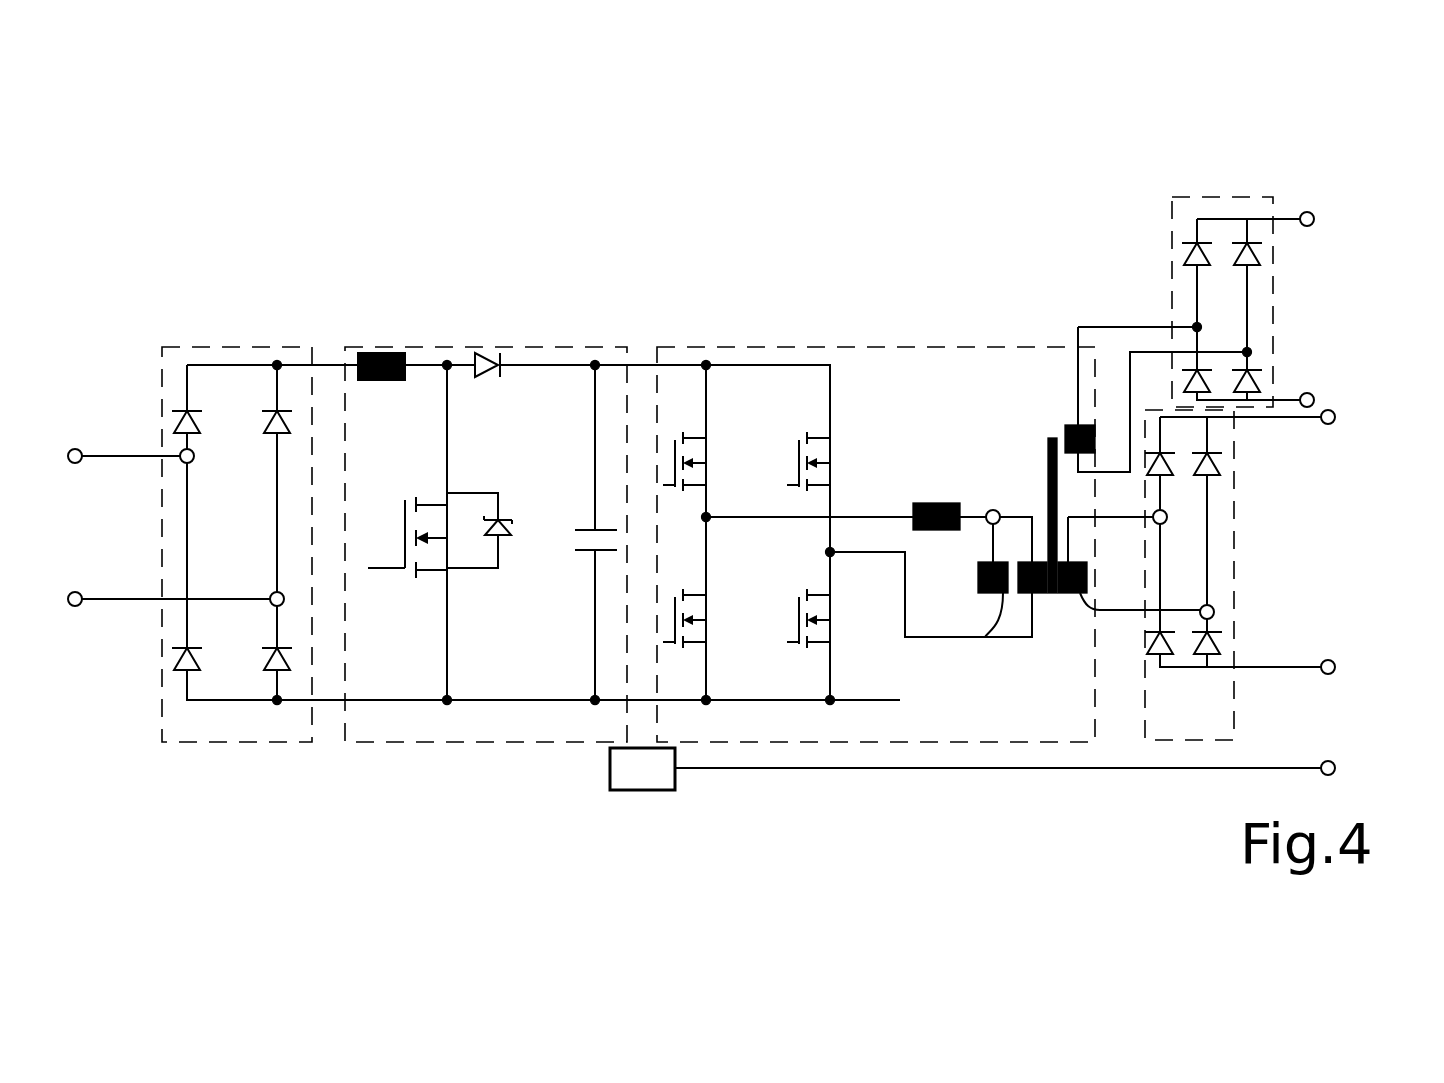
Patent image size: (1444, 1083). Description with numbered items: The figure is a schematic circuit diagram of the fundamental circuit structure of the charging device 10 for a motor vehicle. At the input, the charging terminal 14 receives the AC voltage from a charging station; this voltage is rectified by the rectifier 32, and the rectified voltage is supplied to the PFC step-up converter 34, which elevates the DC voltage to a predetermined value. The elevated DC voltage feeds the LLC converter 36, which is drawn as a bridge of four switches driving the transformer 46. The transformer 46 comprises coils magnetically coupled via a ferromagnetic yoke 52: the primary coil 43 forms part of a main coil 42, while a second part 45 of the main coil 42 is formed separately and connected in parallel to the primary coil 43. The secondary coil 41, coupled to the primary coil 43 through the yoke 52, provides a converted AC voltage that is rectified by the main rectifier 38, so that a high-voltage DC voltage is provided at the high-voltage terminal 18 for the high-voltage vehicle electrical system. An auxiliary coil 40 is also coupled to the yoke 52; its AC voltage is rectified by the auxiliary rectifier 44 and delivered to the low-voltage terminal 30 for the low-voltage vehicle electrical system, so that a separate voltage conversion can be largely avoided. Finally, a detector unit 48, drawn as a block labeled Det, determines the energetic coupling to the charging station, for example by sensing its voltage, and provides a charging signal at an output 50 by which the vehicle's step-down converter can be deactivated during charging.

The charging device 10 is at (497, 758).
The charging terminal 14 is at (78, 615).
The high-voltage terminal 18 is at (1340, 675).
The low-voltage terminal 30 is at (1308, 200).
The rectifier 32 is at (210, 743).
The PFC step-up converter 34 is at (392, 745).
The LLC converter 36 is at (948, 745).
The main rectifier 38 is at (1188, 745).
The auxiliary coil 40 is at (1065, 435).
The secondary coil 41 is at (1075, 593).
The main coil 42 is at (1101, 528).
The primary coil 43 is at (1040, 593).
The auxiliary rectifier 44 is at (1222, 195).
The second part of the main coil 45 is at (993, 639).
The transformer 46 is at (1037, 510).
The detector unit 48 is at (640, 792).
The detector output terminal 50 is at (1336, 770).
The ferromagnetic yoke 52 is at (1048, 450).